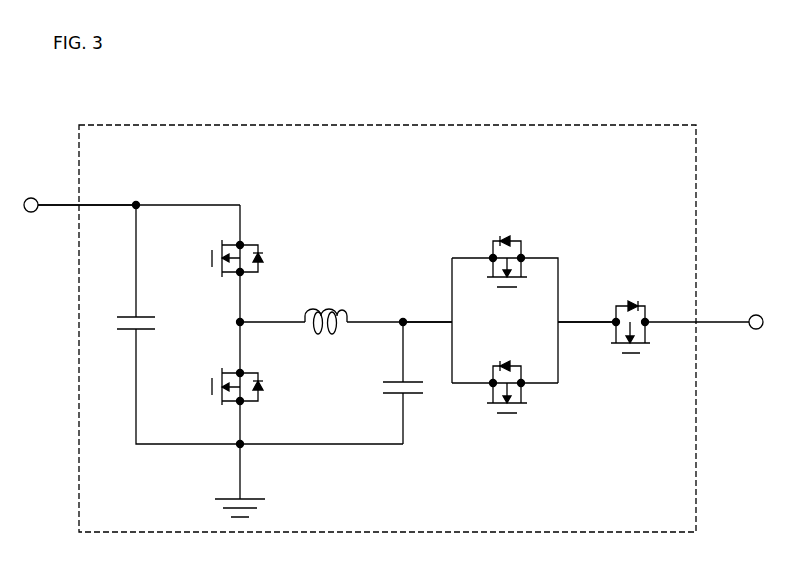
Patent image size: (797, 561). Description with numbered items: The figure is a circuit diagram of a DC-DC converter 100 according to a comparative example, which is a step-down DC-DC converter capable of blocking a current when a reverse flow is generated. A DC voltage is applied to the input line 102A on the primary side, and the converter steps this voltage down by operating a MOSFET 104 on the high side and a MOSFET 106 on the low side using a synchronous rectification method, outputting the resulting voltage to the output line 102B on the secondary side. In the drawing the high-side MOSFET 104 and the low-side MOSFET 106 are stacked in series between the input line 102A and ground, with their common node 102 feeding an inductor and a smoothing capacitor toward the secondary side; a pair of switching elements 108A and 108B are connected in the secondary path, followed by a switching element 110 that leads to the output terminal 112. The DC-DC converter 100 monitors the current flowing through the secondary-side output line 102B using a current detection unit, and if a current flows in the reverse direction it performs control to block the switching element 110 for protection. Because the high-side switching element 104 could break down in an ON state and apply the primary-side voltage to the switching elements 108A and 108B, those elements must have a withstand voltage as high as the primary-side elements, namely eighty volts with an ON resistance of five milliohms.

The DC-DC converter 100 is at (553, 124).
The input line 102A is at (112, 205).
The output line 102B is at (587, 323).
The node between inductor and switch 102 is at (432, 320).
The MOSFET on the high side 104 is at (230, 275).
The MOSFET on the low side 106 is at (232, 403).
The switching element 108A is at (492, 256).
The switching element 108B is at (492, 387).
The switching element 110 is at (615, 335).
The output terminal 112 is at (762, 315).